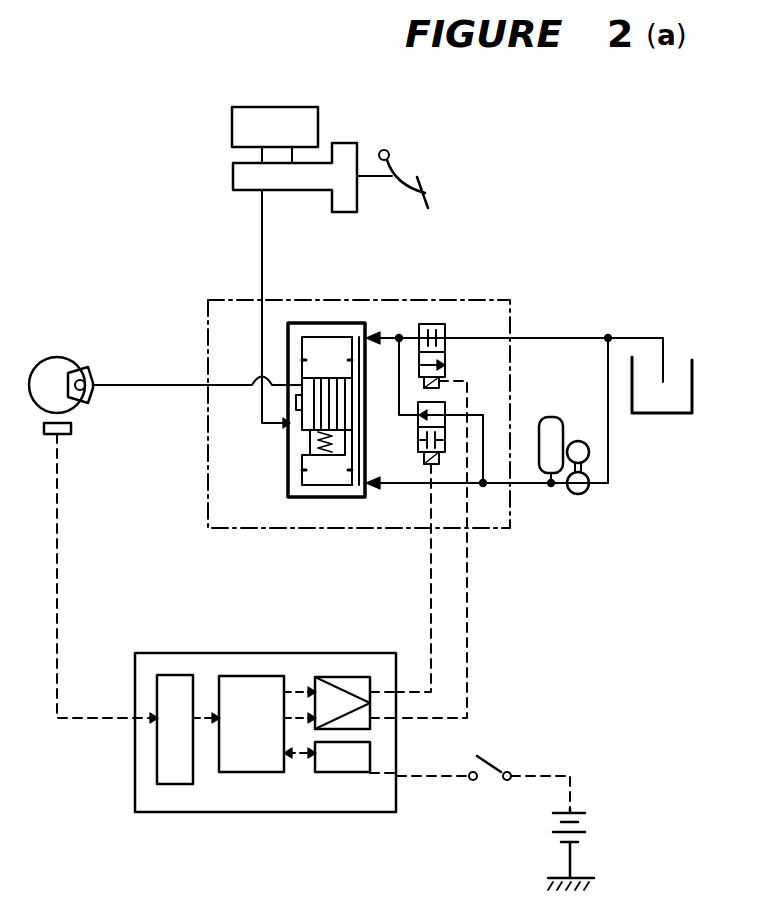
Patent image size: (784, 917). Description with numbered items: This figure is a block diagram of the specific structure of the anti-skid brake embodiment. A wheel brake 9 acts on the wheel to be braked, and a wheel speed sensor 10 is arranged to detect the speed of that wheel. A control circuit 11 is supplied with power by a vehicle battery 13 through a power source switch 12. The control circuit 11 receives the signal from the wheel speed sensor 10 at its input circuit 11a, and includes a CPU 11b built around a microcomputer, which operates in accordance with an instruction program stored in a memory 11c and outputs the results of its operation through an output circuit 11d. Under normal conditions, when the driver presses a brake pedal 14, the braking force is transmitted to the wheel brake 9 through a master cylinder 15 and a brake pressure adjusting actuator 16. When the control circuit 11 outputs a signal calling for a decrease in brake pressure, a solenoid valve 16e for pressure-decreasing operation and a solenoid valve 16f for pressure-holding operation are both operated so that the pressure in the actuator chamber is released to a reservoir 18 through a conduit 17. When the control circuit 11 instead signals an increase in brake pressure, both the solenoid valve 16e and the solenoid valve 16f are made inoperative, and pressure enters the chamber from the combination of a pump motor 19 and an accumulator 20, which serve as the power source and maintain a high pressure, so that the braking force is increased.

The wheel brake 9 is at (80, 363).
The wheel speed sensor 10 is at (73, 428).
The control circuit 11 is at (266, 734).
The input circuit 11a is at (181, 784).
The CPU 11b is at (251, 772).
The memory 11c is at (343, 772).
The output circuit 11d is at (356, 677).
The power source switch 12 is at (490, 760).
The vehicle battery 13 is at (592, 815).
The brake pedal 14 is at (427, 185).
The master cylinder 15 is at (289, 192).
The brake pressure adjusting actuator 16 is at (476, 275).
The solenoid valve for pressure-decreasing operation 16e is at (445, 322).
The solenoid valve for pressure-holding operation 16f is at (417, 432).
The conduit 17 is at (568, 335).
The reservoir 18 is at (693, 360).
The pump motor 19 is at (581, 495).
The accumulator 20 is at (550, 416).